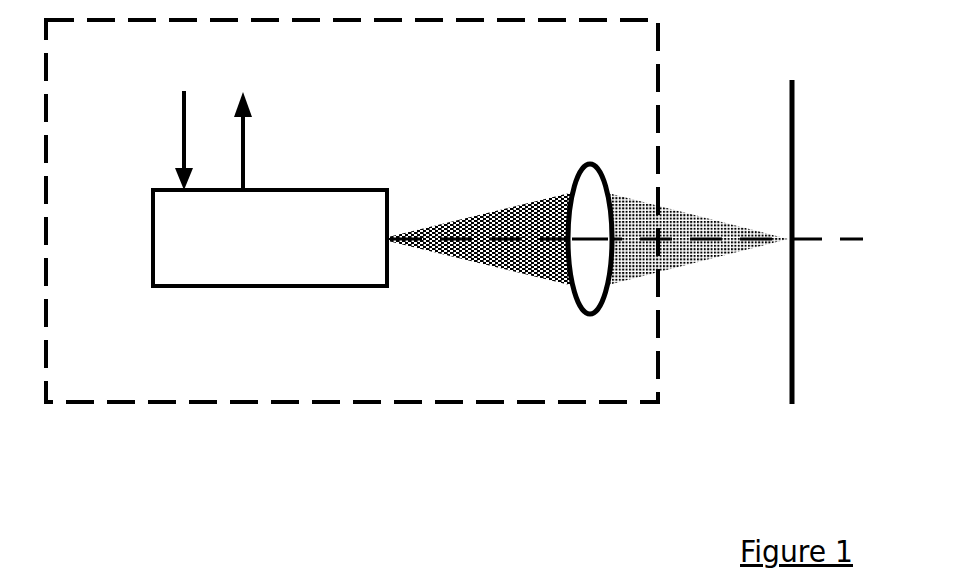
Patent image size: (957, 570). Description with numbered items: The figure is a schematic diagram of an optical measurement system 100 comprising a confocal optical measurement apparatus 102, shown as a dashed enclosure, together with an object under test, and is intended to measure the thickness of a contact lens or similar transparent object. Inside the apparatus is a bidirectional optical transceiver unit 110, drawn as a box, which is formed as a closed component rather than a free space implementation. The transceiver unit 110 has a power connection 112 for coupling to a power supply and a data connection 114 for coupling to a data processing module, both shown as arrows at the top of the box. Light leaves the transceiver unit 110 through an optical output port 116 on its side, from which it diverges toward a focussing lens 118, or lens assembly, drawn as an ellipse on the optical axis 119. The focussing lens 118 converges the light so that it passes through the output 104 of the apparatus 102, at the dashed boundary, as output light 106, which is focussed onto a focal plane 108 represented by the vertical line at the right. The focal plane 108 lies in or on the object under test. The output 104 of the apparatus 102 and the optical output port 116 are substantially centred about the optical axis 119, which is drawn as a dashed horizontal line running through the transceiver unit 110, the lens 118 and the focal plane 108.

The optical measurement system 100 is at (598, 466).
The optical measurement apparatus 102 is at (353, 403).
The output 104 is at (676, 193).
The output light 106 is at (678, 247).
The focal plane 108 is at (792, 330).
The bidirectional optical transceiver unit 110 is at (270, 238).
The power connection 112 is at (183, 189).
The data connection 114 is at (244, 189).
The optical output port 116 is at (388, 240).
The focussing lens 118 is at (593, 312).
The optical axis 119 is at (812, 236).